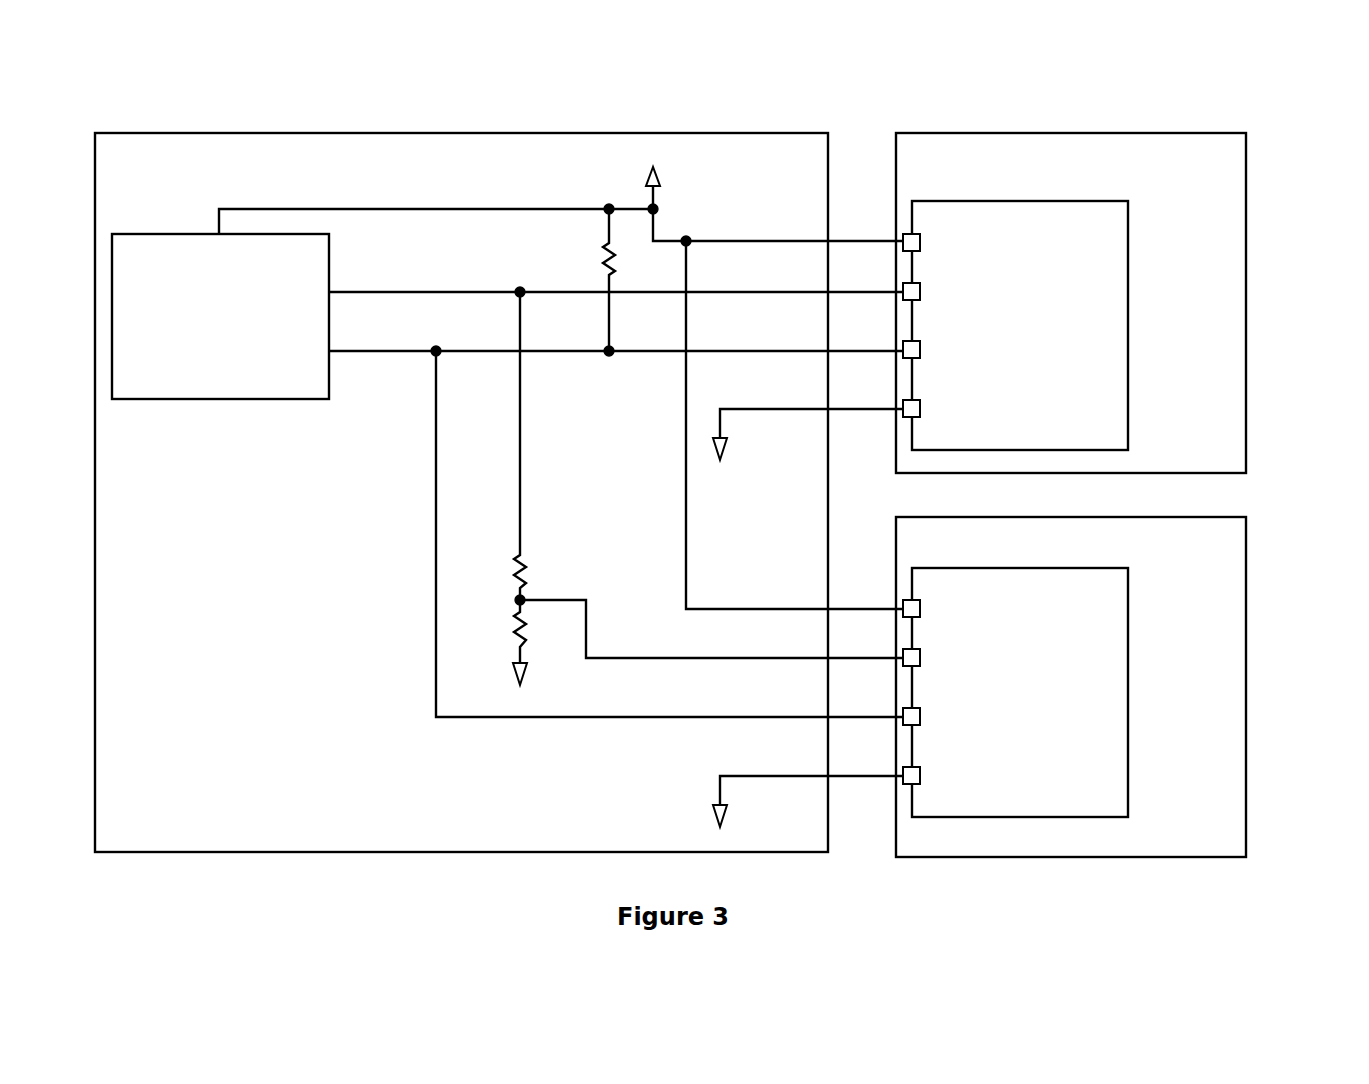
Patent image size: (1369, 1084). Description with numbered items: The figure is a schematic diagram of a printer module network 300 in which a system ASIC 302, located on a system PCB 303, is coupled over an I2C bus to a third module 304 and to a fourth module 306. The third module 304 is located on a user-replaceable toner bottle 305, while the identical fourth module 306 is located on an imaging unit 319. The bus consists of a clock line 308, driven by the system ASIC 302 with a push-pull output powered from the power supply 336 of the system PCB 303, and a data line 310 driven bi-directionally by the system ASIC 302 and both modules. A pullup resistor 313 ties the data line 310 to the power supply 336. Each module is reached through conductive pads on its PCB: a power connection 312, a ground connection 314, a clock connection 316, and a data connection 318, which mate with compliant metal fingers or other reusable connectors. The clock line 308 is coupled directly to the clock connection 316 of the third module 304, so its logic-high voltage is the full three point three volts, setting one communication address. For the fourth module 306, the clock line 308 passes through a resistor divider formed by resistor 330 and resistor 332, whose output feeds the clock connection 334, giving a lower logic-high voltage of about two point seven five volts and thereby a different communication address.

The printer module network 300 is at (1284, 110).
The system ASIC 302 is at (258, 400).
The system PCB 303 is at (250, 133).
The third module 304 is at (1012, 201).
The toner bottle 305 is at (1246, 365).
The fourth module 306 is at (1047, 568).
The clock line 308 is at (422, 291).
The data line 310 is at (412, 352).
The power connection 312 is at (914, 233).
The pullup resistor 313 is at (605, 250).
The ground connection 314 is at (905, 418).
The clock connection 316 is at (903, 301).
The data connection 318 is at (903, 359).
The imaging unit 319 is at (1246, 685).
The resistor 330 is at (527, 563).
The resistor 332 is at (512, 635).
The clock connection 334 is at (922, 650).
The power supply 336 is at (660, 175).